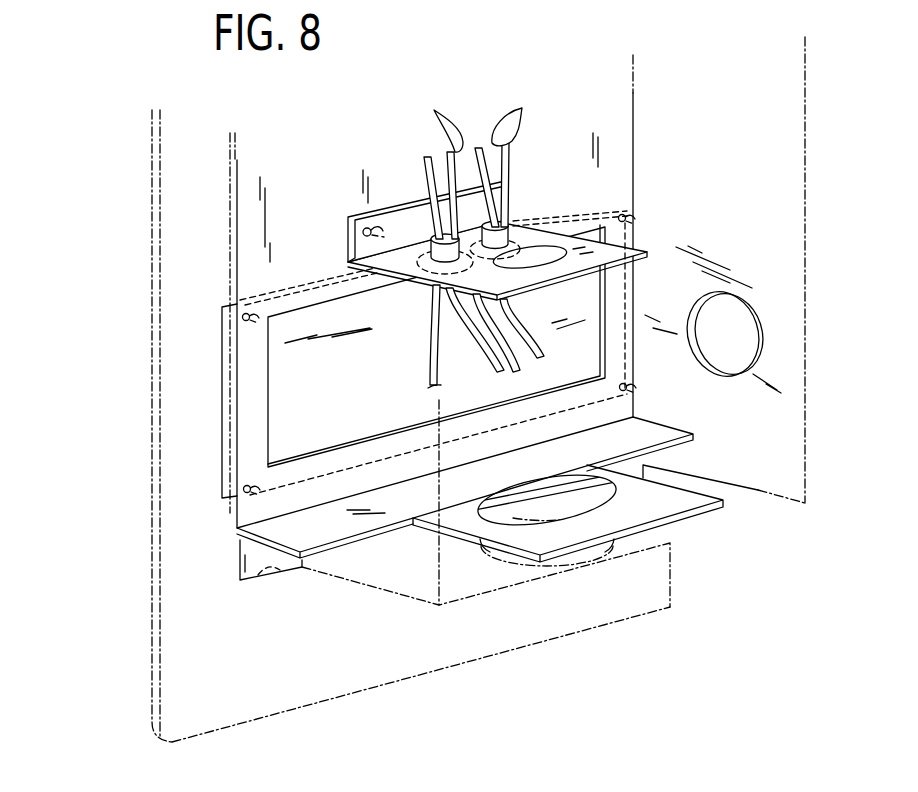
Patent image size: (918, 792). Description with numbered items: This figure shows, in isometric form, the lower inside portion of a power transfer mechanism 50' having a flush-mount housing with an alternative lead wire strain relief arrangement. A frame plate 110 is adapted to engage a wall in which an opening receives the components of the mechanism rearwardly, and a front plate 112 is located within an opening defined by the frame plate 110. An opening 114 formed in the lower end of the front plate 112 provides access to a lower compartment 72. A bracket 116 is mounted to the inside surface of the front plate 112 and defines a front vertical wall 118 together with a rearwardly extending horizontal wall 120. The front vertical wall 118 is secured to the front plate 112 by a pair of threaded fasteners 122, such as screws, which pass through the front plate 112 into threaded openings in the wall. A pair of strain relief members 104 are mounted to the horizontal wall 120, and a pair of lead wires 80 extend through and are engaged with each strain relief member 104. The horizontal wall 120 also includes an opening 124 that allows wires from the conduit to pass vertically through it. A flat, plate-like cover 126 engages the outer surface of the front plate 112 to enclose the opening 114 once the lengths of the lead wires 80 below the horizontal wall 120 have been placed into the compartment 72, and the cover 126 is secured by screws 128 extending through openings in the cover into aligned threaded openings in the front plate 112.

The power transfer mechanism 50' is at (392, 358).
The lower compartment 72 is at (713, 387).
The lead wires 80 is at (480, 233).
The strain relief members 104 is at (428, 243).
The frame plate 110 is at (153, 682).
The front plate 112 is at (323, 182).
The opening 114 is at (306, 456).
The bracket 116 is at (533, 214).
The front vertical wall 118 is at (348, 238).
The horizontal wall 120 is at (614, 250).
The threaded fasteners 122 is at (388, 220).
The opening 124 is at (551, 258).
The cover 126 is at (221, 393).
The screws 128 is at (257, 302).